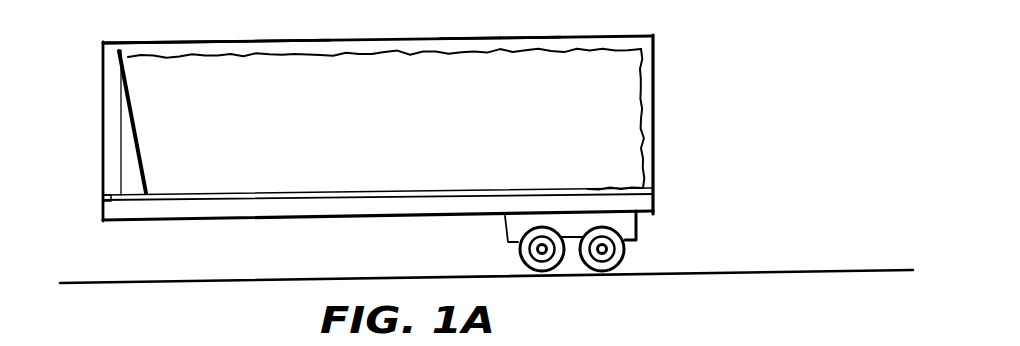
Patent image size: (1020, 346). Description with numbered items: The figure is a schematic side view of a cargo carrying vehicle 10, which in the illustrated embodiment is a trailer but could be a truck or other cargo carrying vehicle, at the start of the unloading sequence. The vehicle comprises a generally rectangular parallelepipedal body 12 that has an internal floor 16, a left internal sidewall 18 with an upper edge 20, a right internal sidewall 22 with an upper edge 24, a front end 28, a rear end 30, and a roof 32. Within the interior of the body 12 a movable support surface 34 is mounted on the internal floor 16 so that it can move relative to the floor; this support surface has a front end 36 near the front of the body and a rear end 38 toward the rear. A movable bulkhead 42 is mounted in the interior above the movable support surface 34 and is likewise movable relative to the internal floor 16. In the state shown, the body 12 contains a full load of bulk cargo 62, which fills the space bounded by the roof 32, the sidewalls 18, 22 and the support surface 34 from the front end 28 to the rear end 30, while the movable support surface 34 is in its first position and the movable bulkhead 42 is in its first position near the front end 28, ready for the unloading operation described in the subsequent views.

The cargo carrying vehicle 10 is at (481, 141).
The body 12 is at (428, 40).
The internal floor 16 is at (257, 212).
The left internal sidewall 18 is at (404, 128).
The upper edge of left internal sidewall 20 is at (470, 39).
The right internal sidewall 22 is at (428, 128).
The upper edge of right internal sidewall 24 is at (530, 19).
The front end 28 is at (102, 111).
The rear end 30 is at (656, 136).
The roof 32 is at (308, 40).
The movable support surface 34 is at (302, 193).
The front end of movable support surface 36 is at (107, 197).
The rear end of movable support surface 38 is at (589, 190).
The movable bulkhead 42 is at (137, 126).
The bulk cargo 62 is at (627, 50).